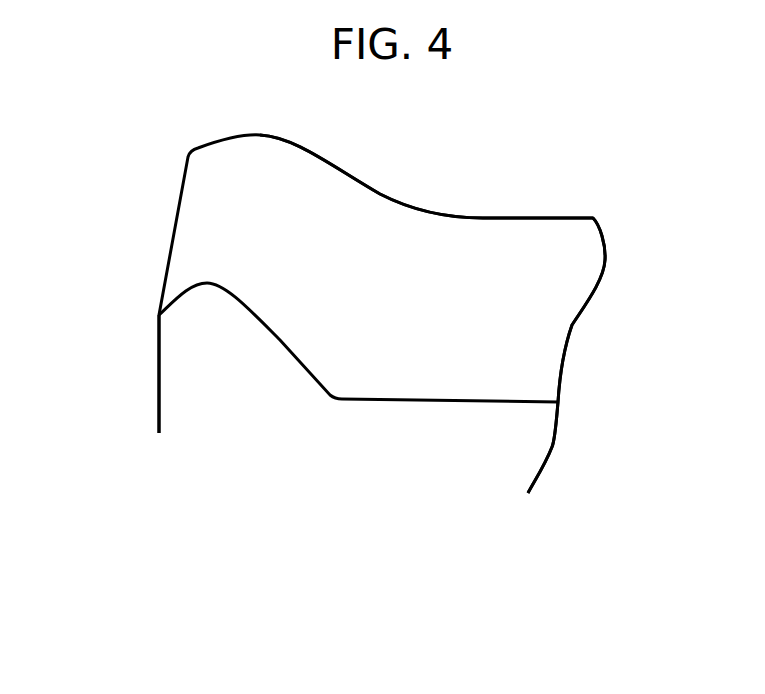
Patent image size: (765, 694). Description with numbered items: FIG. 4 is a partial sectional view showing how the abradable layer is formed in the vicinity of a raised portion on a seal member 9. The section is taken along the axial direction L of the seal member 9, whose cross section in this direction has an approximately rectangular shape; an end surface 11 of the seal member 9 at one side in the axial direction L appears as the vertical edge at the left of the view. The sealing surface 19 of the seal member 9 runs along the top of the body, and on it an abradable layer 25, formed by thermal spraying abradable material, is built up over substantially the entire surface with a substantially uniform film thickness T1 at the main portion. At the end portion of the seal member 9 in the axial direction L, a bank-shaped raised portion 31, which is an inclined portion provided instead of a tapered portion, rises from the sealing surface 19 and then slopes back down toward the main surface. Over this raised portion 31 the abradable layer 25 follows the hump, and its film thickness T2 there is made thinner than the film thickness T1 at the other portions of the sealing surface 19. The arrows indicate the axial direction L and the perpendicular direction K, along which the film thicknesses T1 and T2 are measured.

The seal member 9 is at (183, 410).
The end surface 11 is at (159, 347).
The sealing surface 19 is at (530, 401).
The abradable layer 25 is at (432, 240).
The raised portion 31 is at (203, 330).
The film thickness T1 is at (500, 219).
The film thickness T2 is at (205, 153).
The direction K is at (467, 447).
The axial direction L is at (405, 510).